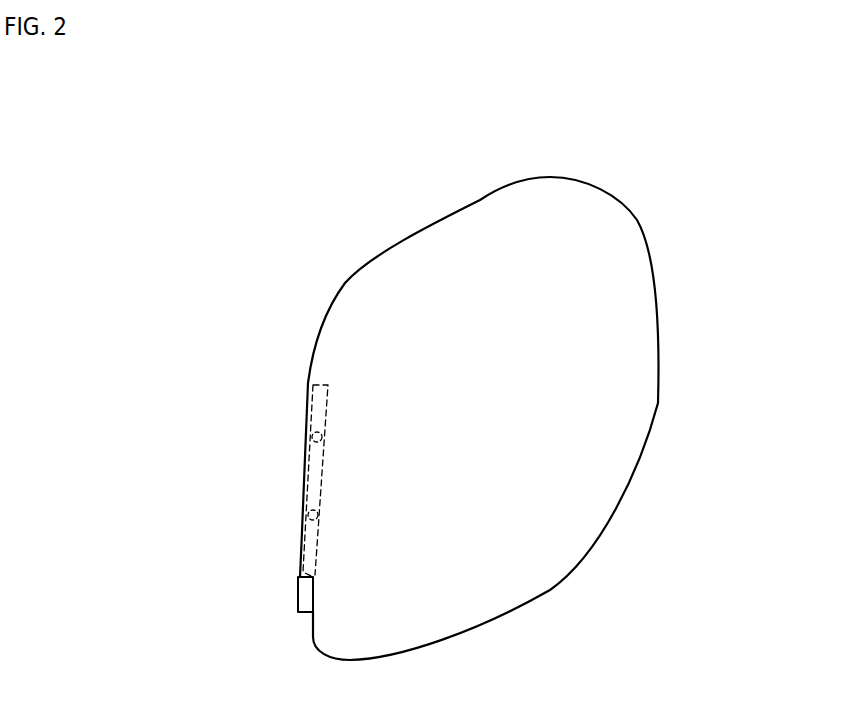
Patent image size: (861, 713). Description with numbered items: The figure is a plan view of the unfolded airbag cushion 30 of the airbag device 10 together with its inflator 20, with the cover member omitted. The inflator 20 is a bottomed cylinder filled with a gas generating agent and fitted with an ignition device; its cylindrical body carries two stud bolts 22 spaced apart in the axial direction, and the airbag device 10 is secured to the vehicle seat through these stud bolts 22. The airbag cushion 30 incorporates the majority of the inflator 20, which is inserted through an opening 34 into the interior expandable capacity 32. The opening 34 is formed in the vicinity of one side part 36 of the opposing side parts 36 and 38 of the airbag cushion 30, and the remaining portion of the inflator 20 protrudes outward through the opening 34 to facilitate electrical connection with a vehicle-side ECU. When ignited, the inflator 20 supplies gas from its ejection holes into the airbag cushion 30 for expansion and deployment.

The airbag device 10 is at (777, 122).
The inflator 20 is at (298, 542).
The stud bolts 22 is at (300, 511).
The airbag cushion 30 is at (553, 587).
The interior expandable capacity 32 is at (447, 285).
The opening 34 is at (300, 577).
The one side part 36 is at (307, 373).
The other side part 38 is at (659, 403).